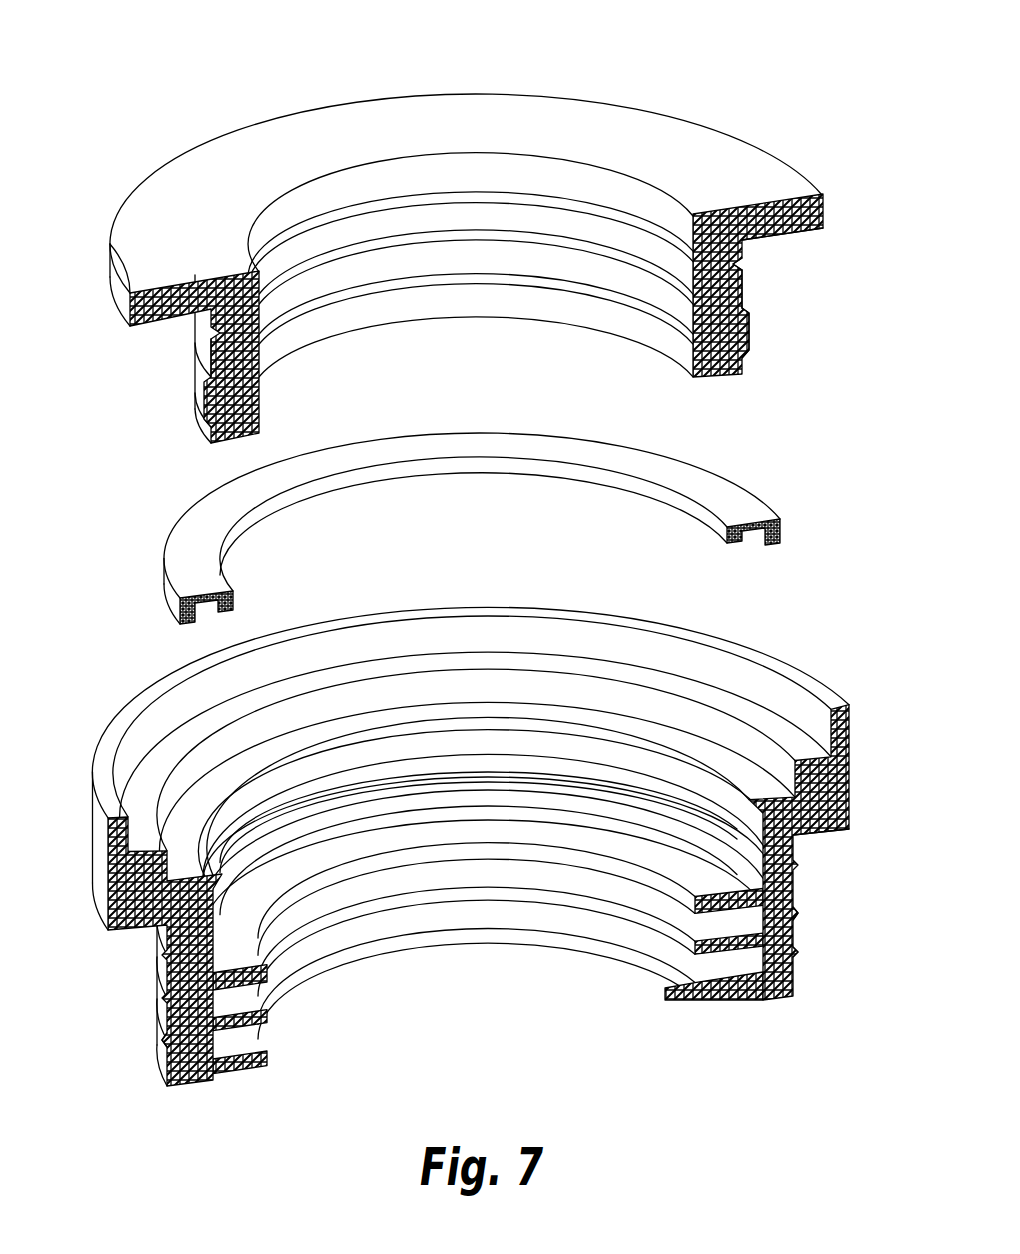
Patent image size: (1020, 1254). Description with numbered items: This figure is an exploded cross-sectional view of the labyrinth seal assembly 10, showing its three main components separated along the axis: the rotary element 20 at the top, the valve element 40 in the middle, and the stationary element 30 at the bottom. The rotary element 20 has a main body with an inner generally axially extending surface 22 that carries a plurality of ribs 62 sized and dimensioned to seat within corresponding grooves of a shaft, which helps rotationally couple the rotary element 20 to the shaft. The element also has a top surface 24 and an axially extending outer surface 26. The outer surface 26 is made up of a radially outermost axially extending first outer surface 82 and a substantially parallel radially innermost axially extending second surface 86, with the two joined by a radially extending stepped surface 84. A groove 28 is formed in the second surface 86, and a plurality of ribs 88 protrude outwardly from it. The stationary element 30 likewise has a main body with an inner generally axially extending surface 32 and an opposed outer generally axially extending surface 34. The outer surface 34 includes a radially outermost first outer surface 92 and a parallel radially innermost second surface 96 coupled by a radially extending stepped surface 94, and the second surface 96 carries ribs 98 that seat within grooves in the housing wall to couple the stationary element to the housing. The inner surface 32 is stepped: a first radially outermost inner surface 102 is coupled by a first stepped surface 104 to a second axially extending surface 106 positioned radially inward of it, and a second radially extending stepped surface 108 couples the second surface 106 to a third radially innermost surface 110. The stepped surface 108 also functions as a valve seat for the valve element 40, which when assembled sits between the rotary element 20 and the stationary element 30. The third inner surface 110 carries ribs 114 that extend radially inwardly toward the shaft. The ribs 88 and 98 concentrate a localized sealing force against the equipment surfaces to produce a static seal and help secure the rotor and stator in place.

The labyrinth seal assembly 10 is at (703, 97).
The rotary element 20 is at (183, 160).
The inner generally axially extending surface 22 is at (285, 345).
The top surface 24 is at (585, 140).
The axially extending outer surface 26 is at (177, 337).
The groove 28 is at (745, 263).
The stationary element 30 is at (815, 683).
The inner generally axially extending surface 32 is at (356, 977).
The outer generally axially extending surface 34 is at (132, 956).
The valve element 40 is at (710, 457).
The ribs 62 is at (667, 320).
The first outer surface 82 is at (116, 296).
The stepped surface 84 is at (806, 232).
The second surface 86 is at (745, 290).
The ribs 88 is at (747, 350).
The first outer surface 92 is at (848, 776).
The stepped surface 94 is at (823, 830).
The second surface 96 is at (796, 953).
The ribs 98 is at (797, 897).
The first inner surface 102 is at (190, 700).
The first stepped surface 104 is at (750, 713).
The second axially extending surface 106 is at (690, 718).
The second stepped surface 108 is at (268, 748).
The third inner surface 110 is at (668, 972).
The ribs 114 is at (266, 1050).